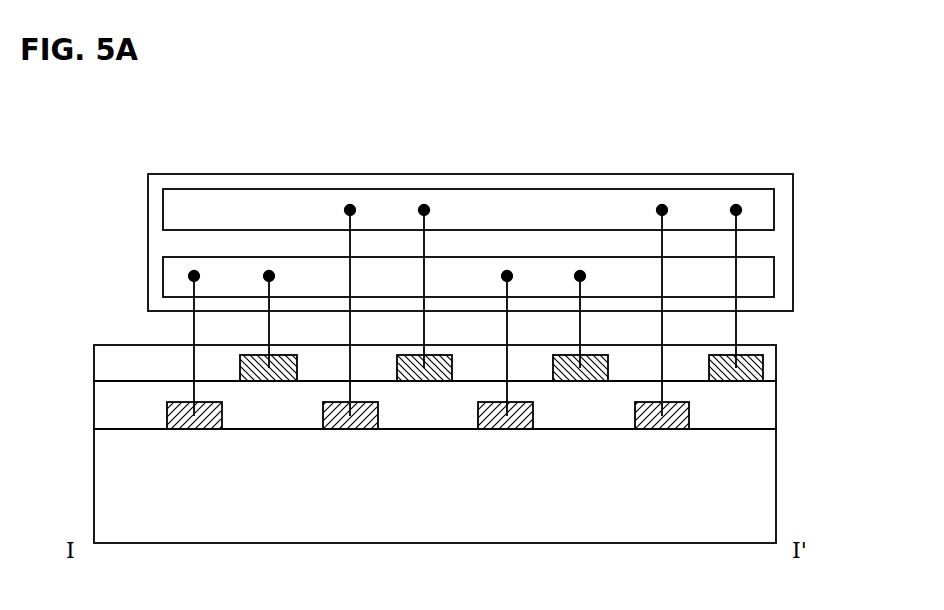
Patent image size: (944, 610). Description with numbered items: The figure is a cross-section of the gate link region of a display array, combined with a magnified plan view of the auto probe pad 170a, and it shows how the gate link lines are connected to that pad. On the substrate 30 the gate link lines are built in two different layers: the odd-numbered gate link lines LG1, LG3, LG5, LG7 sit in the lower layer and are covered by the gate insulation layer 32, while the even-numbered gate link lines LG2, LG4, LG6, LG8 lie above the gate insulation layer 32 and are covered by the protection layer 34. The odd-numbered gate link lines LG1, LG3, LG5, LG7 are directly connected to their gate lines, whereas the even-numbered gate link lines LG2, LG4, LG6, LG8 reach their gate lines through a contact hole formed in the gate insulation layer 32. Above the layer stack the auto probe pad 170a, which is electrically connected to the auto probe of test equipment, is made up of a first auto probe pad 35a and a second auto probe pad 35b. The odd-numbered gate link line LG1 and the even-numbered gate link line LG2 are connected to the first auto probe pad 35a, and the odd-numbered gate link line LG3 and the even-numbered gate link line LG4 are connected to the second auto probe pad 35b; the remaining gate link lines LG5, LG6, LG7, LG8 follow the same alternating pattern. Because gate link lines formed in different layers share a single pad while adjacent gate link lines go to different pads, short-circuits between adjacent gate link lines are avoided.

The auto probe pad for the gate link lines 170a is at (624, 174).
The second auto probe pad 35b is at (772, 212).
The first auto probe pad 35a is at (772, 280).
The protection layer 34 is at (773, 364).
The gate insulation layer 32 is at (770, 406).
The substrate 30 is at (766, 486).
The odd-numbered gate link line LG1 is at (194, 365).
The even-numbered gate link line LG2 is at (274, 326).
The odd-numbered gate link line LG3 is at (350, 332).
The even-numbered gate link line LG4 is at (432, 293).
The odd-numbered gate link line LG5 is at (505, 366).
The even-numbered gate link line LG6 is at (588, 326).
The odd-numbered gate link line LG7 is at (662, 333).
The even-numbered gate link line LG8 is at (743, 293).